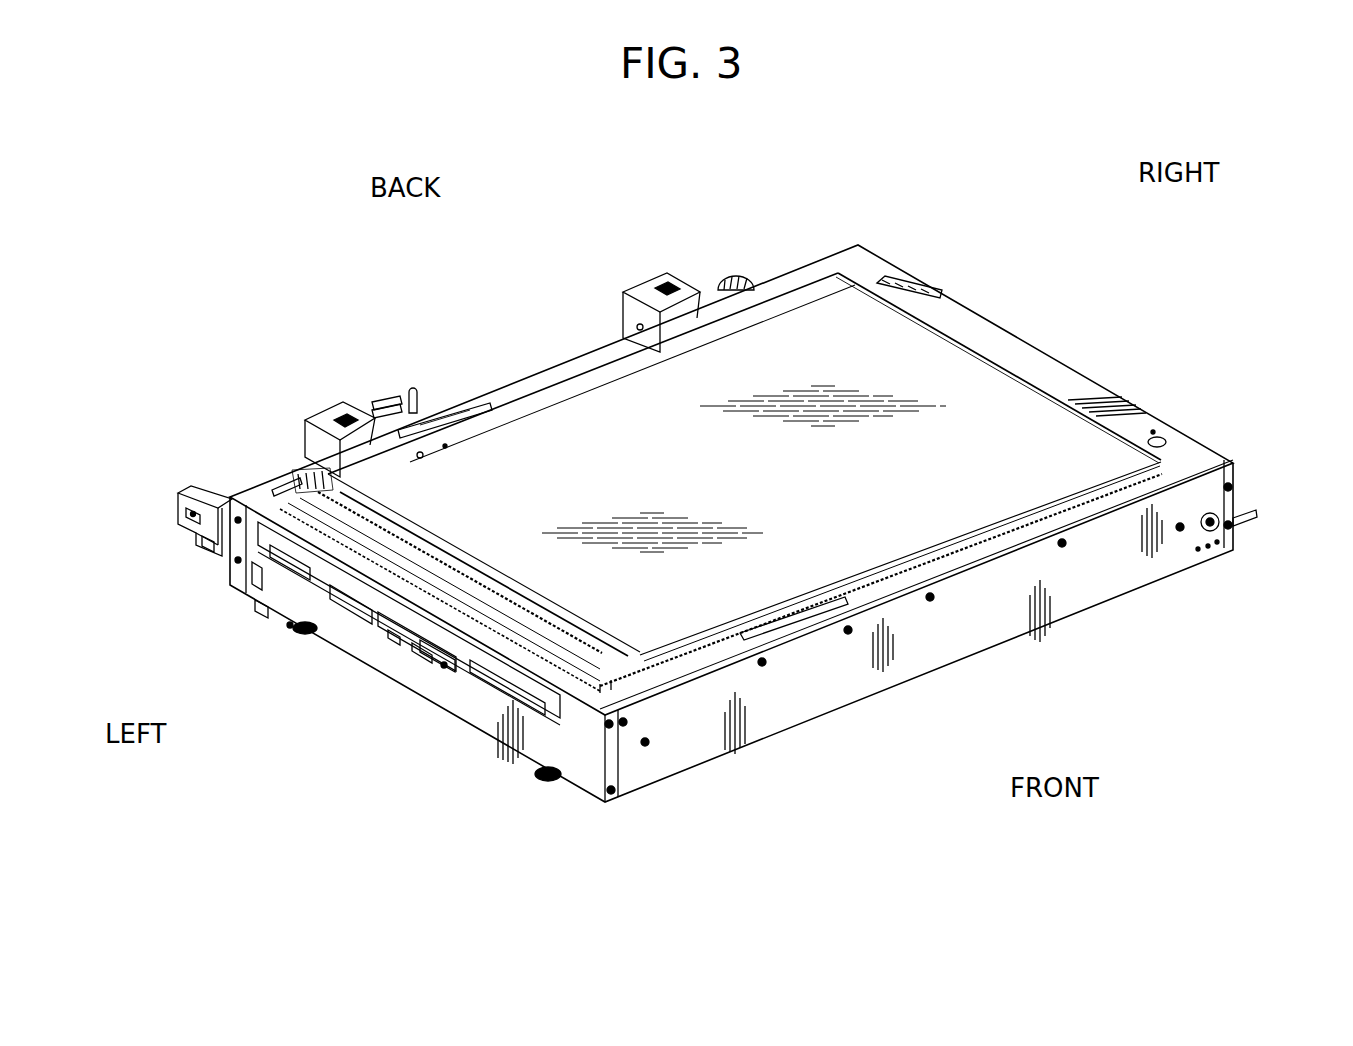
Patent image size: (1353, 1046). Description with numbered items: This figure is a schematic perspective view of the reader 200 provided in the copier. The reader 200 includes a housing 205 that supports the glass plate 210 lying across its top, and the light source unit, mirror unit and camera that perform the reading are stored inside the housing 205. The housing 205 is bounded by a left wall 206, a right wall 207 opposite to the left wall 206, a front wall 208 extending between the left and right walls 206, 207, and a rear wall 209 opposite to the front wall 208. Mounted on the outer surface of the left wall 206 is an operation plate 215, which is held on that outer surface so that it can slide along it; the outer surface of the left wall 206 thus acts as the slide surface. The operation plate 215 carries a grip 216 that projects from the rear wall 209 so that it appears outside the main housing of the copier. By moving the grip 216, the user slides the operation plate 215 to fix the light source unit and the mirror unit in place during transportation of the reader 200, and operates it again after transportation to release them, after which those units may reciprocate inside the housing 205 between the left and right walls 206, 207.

The reader 200 is at (1150, 290).
The housing 205 is at (1113, 593).
The left wall 206 is at (490, 718).
The right wall 207 is at (1118, 395).
The front wall 208 is at (992, 613).
The rear wall 209 is at (538, 371).
The glass plate 210 is at (905, 366).
The operation plate 215 is at (397, 640).
The grip 216 is at (210, 543).